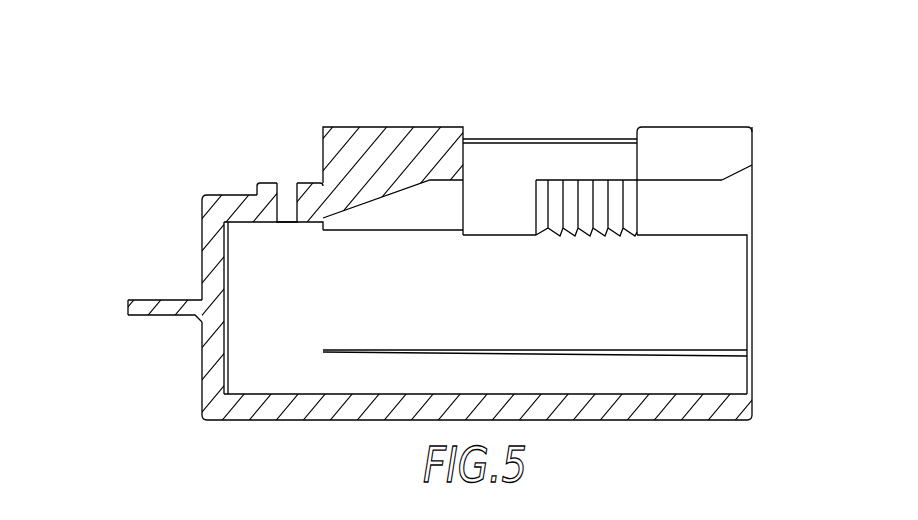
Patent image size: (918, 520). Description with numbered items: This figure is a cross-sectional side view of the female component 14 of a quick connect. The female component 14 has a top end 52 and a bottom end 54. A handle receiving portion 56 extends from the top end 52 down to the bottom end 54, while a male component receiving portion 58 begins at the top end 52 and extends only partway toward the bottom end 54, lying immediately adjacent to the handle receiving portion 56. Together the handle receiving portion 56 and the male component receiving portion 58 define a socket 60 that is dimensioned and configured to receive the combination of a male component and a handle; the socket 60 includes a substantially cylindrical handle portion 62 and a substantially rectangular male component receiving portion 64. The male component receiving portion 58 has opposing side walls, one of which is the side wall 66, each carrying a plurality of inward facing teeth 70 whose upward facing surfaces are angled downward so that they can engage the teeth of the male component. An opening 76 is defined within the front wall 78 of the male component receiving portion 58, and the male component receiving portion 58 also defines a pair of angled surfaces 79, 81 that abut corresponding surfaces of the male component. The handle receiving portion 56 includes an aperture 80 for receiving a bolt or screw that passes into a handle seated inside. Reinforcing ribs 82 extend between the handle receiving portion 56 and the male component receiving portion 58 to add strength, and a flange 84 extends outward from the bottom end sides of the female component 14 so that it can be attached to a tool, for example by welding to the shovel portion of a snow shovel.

The female component 14 is at (650, 70).
The top end 52 is at (722, 413).
The bottom end 54 is at (218, 414).
The handle receiving portion 56 is at (258, 338).
The male component receiving portion 58 is at (424, 214).
The socket 60 is at (268, 266).
The handle portion 62 is at (494, 323).
The male component receiving portion 64 is at (507, 221).
The side wall 66 is at (487, 154).
The teeth 70 is at (587, 195).
The opening 76 is at (532, 140).
The front wall 78 is at (680, 127).
The angled surface 79 is at (372, 208).
The aperture 80 is at (286, 183).
The angled surface 81 is at (735, 180).
The reinforcing ribs 82 is at (373, 128).
The flange 84 is at (180, 302).